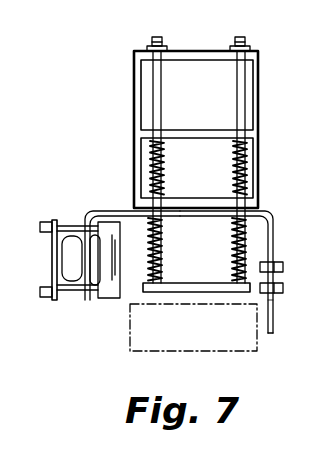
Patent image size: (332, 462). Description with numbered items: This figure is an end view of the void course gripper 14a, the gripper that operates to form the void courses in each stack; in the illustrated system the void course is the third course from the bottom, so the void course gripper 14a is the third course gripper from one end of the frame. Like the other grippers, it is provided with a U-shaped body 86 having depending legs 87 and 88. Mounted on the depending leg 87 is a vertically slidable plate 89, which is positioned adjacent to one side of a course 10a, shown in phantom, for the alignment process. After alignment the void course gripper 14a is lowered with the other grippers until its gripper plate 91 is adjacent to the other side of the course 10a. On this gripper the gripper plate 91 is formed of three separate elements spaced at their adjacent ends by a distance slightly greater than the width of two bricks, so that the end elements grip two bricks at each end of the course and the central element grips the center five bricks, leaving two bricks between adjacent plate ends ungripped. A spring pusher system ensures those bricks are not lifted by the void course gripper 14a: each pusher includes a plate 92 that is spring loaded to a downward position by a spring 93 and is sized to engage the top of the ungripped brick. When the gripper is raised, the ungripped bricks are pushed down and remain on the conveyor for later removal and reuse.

The course 10a is at (128, 347).
The void course gripper 14a is at (134, 165).
The U-shaped body 86 is at (122, 211).
The depending leg 87 is at (273, 226).
The depending leg 88 is at (80, 298).
The vertically slidable plate 89 is at (270, 334).
The gripper plate 91 is at (118, 288).
The plate 92 is at (216, 292).
The spring 93 is at (236, 262).